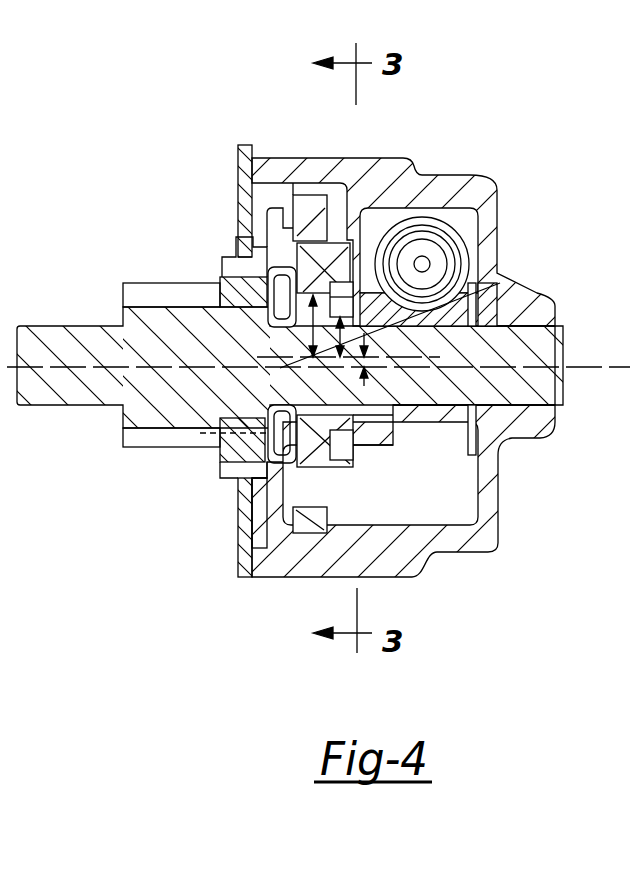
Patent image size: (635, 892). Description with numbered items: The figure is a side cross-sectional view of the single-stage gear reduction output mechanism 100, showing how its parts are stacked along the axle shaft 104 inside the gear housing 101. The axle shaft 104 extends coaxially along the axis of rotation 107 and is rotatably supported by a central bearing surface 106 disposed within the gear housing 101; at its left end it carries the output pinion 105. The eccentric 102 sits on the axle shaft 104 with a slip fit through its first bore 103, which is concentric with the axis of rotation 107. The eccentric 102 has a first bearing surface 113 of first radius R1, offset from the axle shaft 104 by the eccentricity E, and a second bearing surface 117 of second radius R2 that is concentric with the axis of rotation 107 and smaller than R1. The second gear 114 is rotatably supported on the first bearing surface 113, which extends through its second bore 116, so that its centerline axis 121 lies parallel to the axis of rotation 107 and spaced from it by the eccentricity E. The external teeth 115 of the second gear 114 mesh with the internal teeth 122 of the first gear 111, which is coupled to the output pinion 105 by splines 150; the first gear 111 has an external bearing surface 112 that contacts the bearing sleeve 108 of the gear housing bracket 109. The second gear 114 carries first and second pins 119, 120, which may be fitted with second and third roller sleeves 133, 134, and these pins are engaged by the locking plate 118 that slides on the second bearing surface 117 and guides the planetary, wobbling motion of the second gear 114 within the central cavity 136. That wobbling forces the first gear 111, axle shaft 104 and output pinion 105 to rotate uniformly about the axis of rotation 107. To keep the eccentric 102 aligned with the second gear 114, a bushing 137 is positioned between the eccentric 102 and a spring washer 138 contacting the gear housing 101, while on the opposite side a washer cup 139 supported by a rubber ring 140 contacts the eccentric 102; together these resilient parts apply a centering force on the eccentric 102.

The single-stage gear reduction output mechanism 100 is at (86, 72).
The gear housing 101 is at (478, 193).
The eccentric 102 is at (400, 437).
The first bore 103 is at (380, 397).
The axle shaft 104 is at (41, 387).
The output pinion 105 is at (148, 283).
The central bearing surface 106 is at (540, 318).
The axis of rotation 107 is at (525, 357).
The bearing sleeve 108 is at (236, 262).
The gear housing bracket 109 is at (249, 173).
The first gear 111 is at (222, 277).
The external bearing surface 112 is at (233, 480).
The first bearing surface 113 is at (283, 332).
The second gear 114 is at (280, 266).
The external teeth 115 is at (246, 570).
The second bore 116 is at (273, 433).
The second bearing surface 117 is at (345, 300).
The locking plate 118 is at (355, 462).
The first pin 119 is at (338, 262).
The second pin 120 is at (340, 447).
The centerline axis 121 is at (400, 362).
The internal teeth 122 is at (312, 507).
The second roller sleeve 133 is at (347, 247).
The third roller sleeve 134 is at (345, 475).
The central cavity 136 is at (268, 535).
The bushing 137 is at (472, 418).
The spring washer 138 is at (465, 275).
The washer cup 139 is at (280, 262).
The rubber ring 140 is at (274, 311).
The splines 150 is at (215, 452).
The first radius R1 is at (326, 348).
The second radius R2 is at (500, 283).
The eccentricity E is at (372, 358).